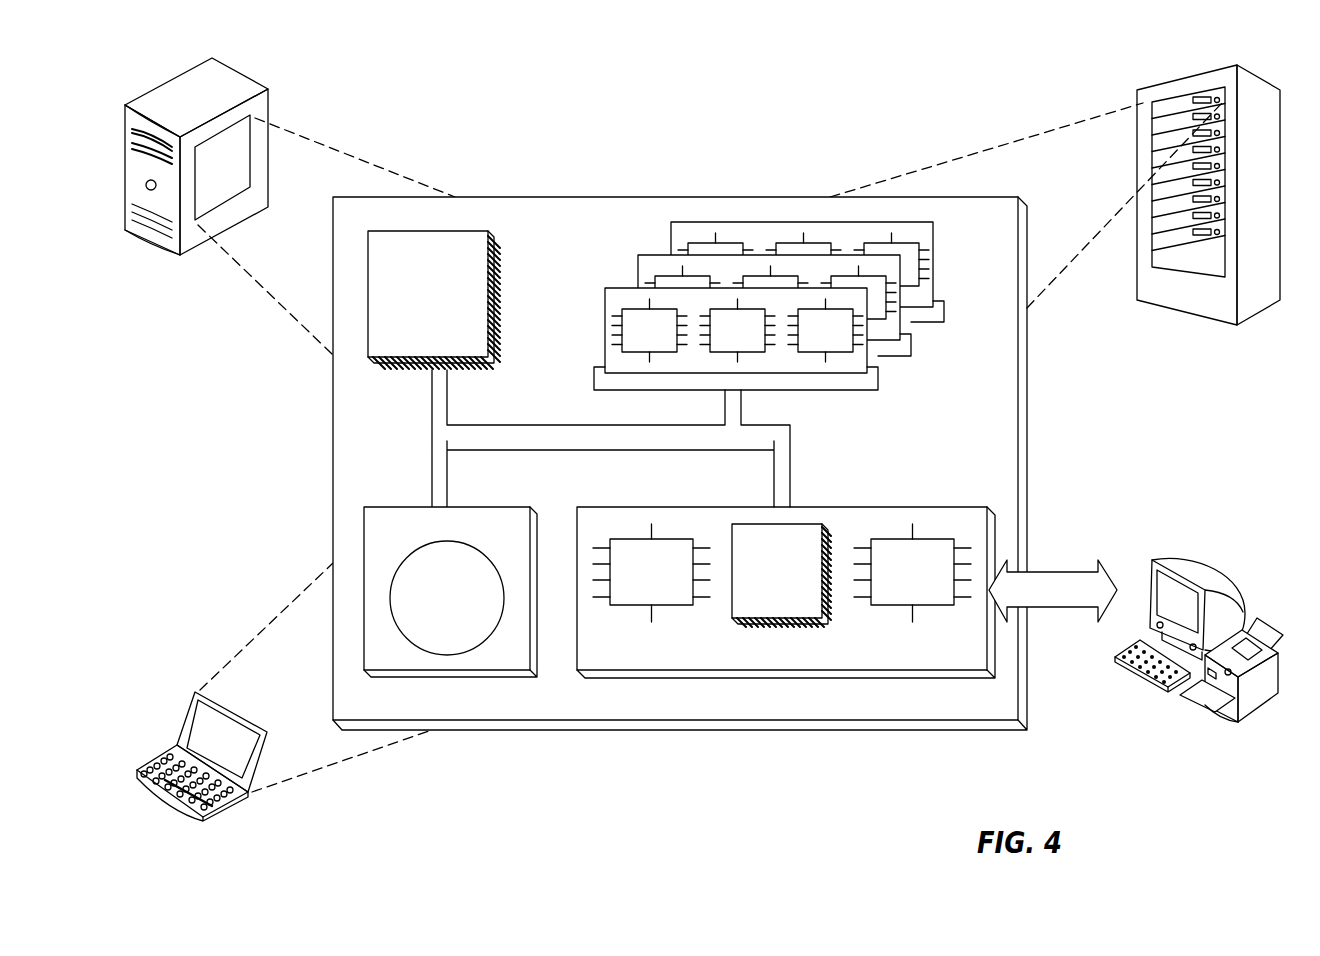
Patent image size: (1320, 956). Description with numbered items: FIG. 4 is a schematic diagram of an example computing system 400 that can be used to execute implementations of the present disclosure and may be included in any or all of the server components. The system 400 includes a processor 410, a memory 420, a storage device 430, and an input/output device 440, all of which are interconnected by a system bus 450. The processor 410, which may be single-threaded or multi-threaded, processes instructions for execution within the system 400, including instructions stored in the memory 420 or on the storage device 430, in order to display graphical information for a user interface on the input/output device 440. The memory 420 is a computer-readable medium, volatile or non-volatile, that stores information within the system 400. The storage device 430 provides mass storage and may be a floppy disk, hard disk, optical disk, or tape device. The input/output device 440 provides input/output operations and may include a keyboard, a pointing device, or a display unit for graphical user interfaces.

The computing system 400 is at (517, 125).
The processor 410 is at (480, 350).
The memory 420 is at (943, 355).
The storage device 430 is at (521, 665).
The input/output device 440 is at (1150, 568).
The system bus 450 is at (605, 442).